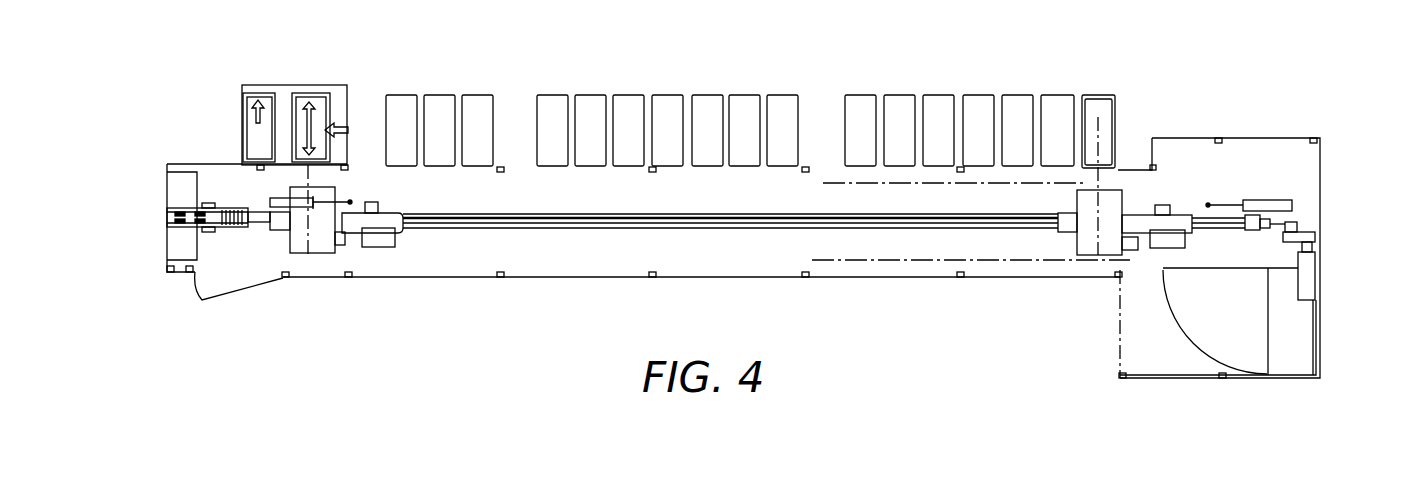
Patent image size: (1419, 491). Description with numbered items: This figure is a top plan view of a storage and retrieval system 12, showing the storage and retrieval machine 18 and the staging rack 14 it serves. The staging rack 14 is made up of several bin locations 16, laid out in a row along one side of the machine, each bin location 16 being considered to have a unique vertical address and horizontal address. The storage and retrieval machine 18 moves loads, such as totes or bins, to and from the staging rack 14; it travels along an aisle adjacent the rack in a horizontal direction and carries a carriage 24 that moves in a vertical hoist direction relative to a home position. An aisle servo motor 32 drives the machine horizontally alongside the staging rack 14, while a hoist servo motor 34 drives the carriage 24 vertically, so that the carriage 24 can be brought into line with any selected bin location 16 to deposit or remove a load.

The storage and retrieval system 12 is at (1337, 302).
The staging rack 14 is at (392, 90).
The bin location 16 is at (574, 60).
The storage and retrieval machine 18 is at (158, 222).
The carriage 24 is at (1120, 195).
The aisle servo motor 32 is at (1314, 233).
The hoist servo motor 34 is at (1165, 206).